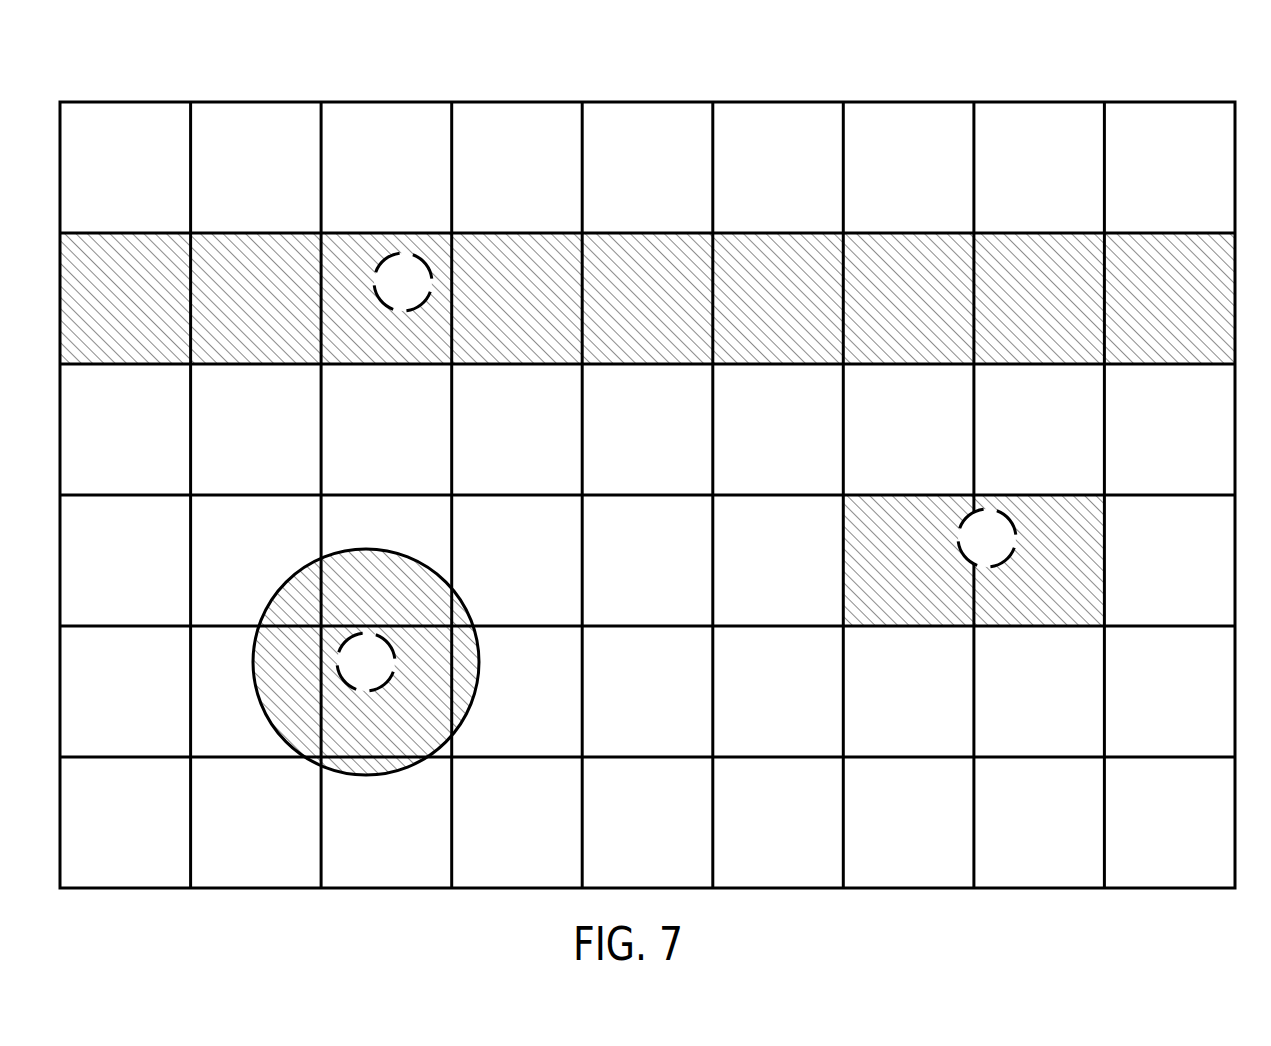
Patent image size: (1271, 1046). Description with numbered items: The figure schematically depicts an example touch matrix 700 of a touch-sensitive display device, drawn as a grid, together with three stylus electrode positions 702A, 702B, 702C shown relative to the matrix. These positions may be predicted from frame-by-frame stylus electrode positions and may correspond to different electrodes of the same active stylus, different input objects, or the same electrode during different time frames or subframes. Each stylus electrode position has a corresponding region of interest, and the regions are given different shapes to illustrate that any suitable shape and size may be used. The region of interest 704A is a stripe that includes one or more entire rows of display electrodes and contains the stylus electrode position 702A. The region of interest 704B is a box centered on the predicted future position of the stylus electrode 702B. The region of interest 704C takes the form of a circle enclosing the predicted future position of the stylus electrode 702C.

The touch matrix 700 is at (99, 78).
The stylus electrode position 702A is at (402, 252).
The region of interest 704A is at (469, 233).
The stylus electrode position 702B is at (988, 508).
The region of interest 704B is at (947, 494).
The stylus electrode position 702C is at (367, 632).
The region of interest 704C is at (298, 573).